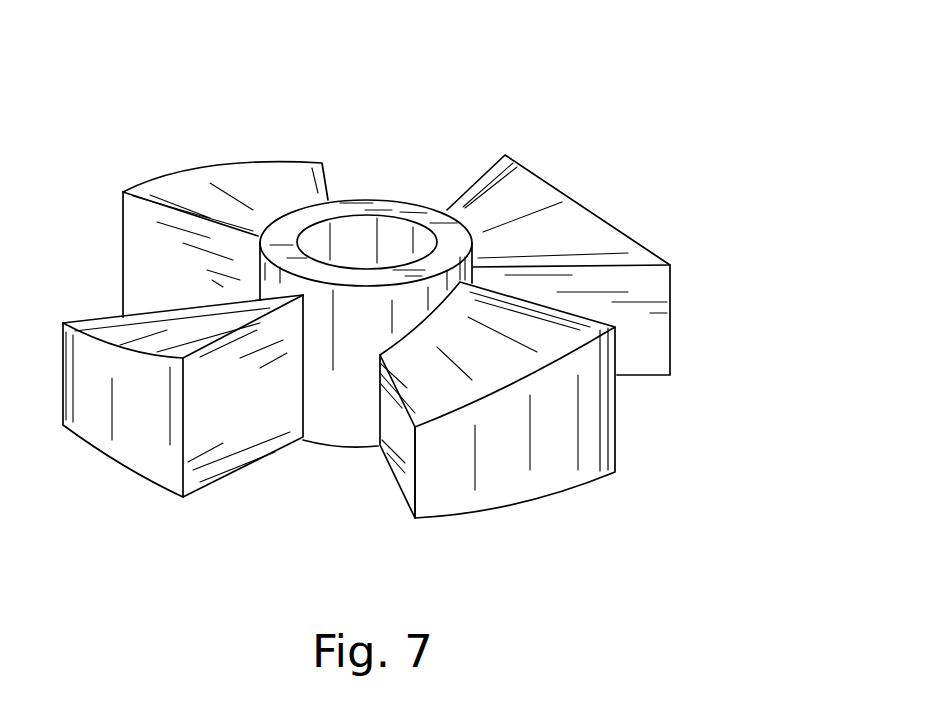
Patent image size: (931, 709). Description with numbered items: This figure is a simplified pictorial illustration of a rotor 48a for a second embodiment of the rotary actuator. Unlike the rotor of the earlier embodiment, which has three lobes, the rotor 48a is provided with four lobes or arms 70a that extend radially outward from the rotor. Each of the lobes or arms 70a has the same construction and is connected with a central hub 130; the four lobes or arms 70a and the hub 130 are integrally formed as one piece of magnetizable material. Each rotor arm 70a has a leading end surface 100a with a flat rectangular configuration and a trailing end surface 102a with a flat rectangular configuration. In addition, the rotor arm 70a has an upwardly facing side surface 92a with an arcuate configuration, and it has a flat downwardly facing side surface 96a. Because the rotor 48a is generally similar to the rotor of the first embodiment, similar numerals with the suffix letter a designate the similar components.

The central hub 130 is at (383, 208).
The lobe or arm 70a is at (410, 324).
The rotor 48a is at (573, 187).
The upwardly facing side surface 92a is at (488, 335).
The downwardly facing side surface 96a is at (577, 490).
The leading end surface 100a is at (403, 460).
The trailing end surface 102a is at (407, 332).